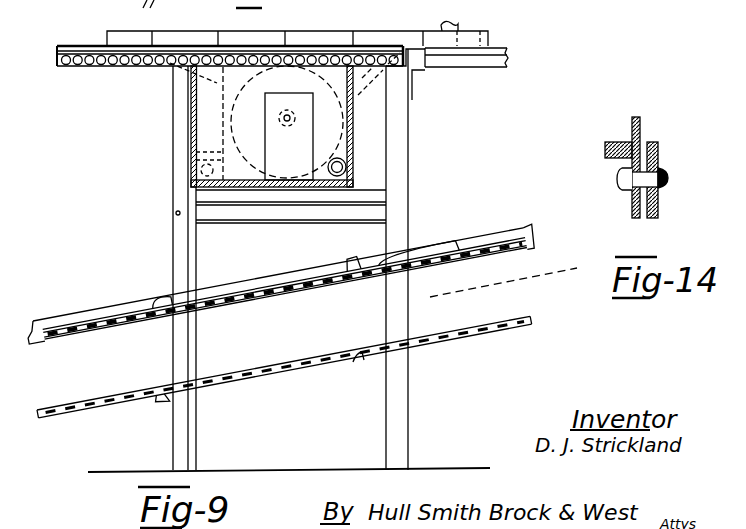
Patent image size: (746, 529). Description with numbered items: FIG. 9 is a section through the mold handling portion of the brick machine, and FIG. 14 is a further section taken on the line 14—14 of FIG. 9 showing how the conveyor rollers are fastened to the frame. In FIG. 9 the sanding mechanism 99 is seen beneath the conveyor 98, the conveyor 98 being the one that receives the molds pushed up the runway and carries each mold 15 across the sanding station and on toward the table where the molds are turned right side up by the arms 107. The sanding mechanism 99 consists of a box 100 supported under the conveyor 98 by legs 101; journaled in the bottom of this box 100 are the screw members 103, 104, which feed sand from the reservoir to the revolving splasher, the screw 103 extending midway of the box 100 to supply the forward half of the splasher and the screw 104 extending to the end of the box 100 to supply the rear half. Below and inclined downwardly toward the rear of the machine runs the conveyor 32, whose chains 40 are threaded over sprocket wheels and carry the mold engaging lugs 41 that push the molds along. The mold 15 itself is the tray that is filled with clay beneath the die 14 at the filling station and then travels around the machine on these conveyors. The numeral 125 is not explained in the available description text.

In FIG. 9, the die 14 is at (70, 93).
In FIG. 9, the mold 15 is at (442, 40).
In FIG. 9, the conveyor 32 is at (270, 296).
In FIG. 9, the chains 40 is at (273, 374).
In FIG. 9, the mold engaging lugs 41 is at (360, 360).
In FIG. 9, the conveyor 98 is at (55, 68).
In FIG. 14, the conveyor 98 is at (625, 160).
In FIG. 9, the sanding mechanism 99 is at (278, 143).
In FIG. 9, the box 100 is at (353, 124).
In FIG. 9, the legs 101 is at (180, 251).
In FIG. 9, the screw member 103 is at (346, 167).
In FIG. 9, the screw member 104 is at (187, 177).
In FIG. 9, the arms 107 is at (390, 183).
In FIG. 9, the latch 125 is at (455, 24).